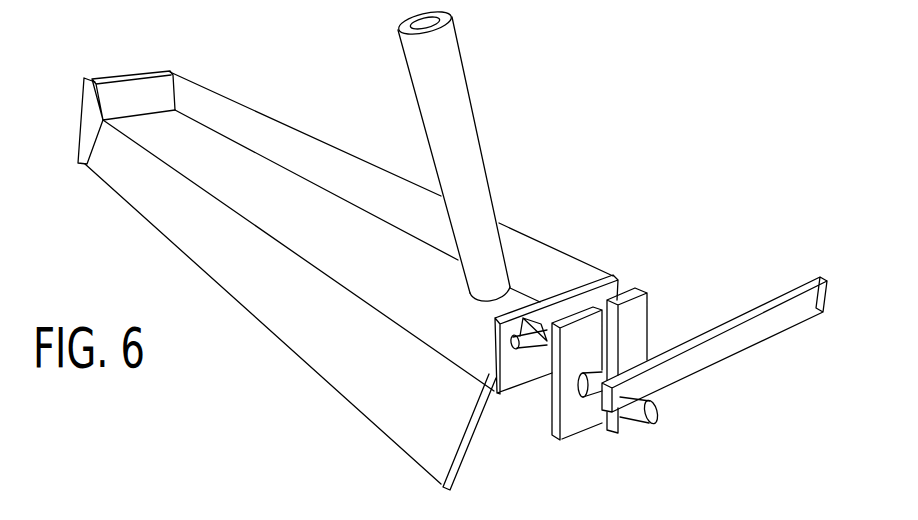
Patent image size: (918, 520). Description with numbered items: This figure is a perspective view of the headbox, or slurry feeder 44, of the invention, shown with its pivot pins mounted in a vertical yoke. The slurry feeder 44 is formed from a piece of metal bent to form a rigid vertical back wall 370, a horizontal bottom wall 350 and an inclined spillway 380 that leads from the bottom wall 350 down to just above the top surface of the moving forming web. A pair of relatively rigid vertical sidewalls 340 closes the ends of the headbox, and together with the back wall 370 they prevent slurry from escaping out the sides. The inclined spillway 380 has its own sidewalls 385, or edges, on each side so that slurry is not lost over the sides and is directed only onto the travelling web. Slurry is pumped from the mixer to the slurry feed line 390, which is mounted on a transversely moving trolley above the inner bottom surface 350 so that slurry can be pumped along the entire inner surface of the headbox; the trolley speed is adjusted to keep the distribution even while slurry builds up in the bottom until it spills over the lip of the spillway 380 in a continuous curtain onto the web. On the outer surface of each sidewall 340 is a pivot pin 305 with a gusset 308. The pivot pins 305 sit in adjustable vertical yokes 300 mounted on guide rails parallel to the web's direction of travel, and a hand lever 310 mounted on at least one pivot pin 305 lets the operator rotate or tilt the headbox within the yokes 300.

The slurry feeder 44 is at (349, 278).
The adjustable vertical yoke 300 is at (647, 290).
The pivot pin 305 is at (656, 416).
The gusset 308 is at (523, 350).
The hand lever 310 is at (737, 327).
The sidewall 340 is at (127, 89).
The bottom wall 350 is at (291, 202).
The back wall 370 is at (353, 177).
The spillway 380 is at (340, 362).
The spillway sidewall 385 is at (83, 141).
The slurry feed line 390 is at (448, 110).